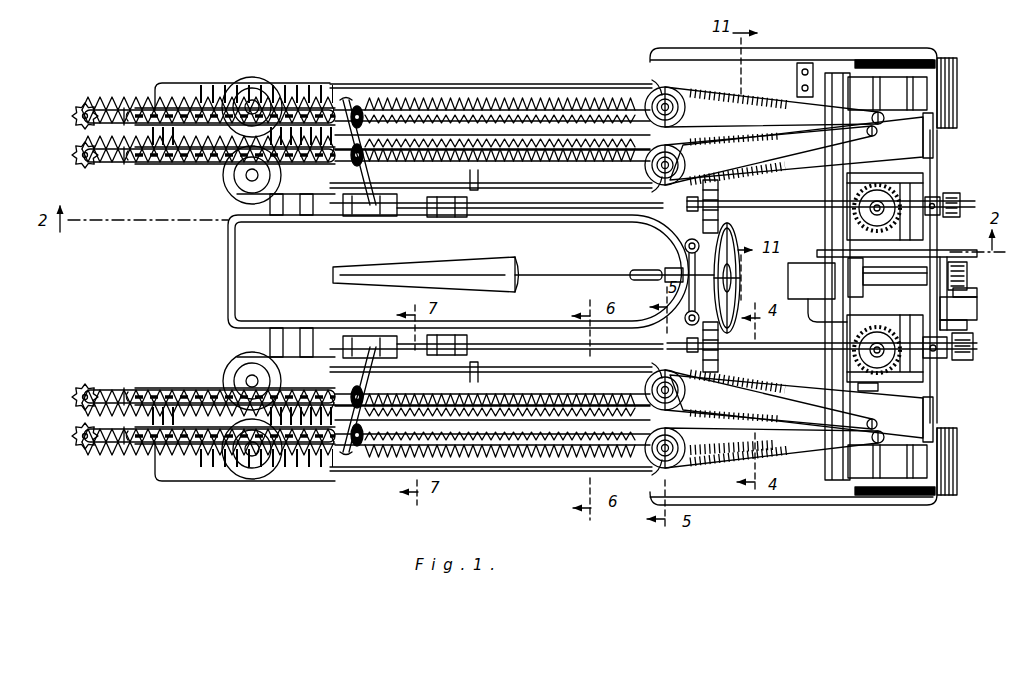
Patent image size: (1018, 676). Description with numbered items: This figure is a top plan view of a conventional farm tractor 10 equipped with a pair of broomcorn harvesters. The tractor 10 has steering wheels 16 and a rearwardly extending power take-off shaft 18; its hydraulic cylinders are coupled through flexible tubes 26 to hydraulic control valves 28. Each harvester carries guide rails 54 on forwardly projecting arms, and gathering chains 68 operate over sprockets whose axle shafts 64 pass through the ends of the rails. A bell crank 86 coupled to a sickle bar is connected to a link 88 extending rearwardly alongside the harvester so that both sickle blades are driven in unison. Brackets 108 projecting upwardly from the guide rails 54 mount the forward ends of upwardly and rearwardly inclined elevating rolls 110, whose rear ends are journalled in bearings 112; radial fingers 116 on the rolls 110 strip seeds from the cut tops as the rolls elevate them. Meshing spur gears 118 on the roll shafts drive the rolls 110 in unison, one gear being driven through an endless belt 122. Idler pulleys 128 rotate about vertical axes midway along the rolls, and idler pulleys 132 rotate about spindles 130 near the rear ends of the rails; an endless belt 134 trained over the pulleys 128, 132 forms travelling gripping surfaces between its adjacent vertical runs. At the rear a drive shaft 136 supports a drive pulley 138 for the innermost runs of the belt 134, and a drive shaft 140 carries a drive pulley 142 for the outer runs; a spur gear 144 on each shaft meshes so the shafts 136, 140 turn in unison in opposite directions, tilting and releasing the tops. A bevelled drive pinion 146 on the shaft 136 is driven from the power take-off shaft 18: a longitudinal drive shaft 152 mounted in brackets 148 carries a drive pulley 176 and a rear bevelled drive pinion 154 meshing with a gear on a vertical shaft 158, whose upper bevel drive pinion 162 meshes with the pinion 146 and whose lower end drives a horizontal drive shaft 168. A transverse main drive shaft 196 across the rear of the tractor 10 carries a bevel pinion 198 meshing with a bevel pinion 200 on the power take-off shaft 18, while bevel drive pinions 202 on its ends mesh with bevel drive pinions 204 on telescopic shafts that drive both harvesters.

The tractor 10 is at (228, 266).
The steering wheels 16 is at (172, 88).
The power take-off shaft 18 is at (880, 279).
The flexible tubes 26 is at (520, 210).
The hydraulic control valves 28 is at (685, 247).
The guide rails 54 is at (421, 155).
The axle shafts 64 is at (70, 152).
The gathering chains 68 is at (108, 165).
The bell crank 86 is at (130, 165).
The link 88 is at (196, 170).
The brackets 108 is at (125, 112).
The elevating rolls 110 is at (158, 112).
The bearings 112 is at (348, 100).
The radial fingers 116 is at (216, 108).
The spur gears 118 is at (363, 108).
The endless belt 122 is at (351, 216).
The idler pulleys 128 is at (268, 96).
The spindles 130 is at (673, 100).
The idler pulleys 132 is at (650, 95).
The endless belt 134 is at (476, 86).
The drive shaft 136 is at (812, 75).
The drive pulley 138 is at (774, 277).
The drive shaft 140 is at (910, 215).
The drive pulley 142 is at (962, 447).
The spur gear 144 is at (923, 60).
The bevelled drive pinion 146 is at (898, 200).
The brackets 148 is at (474, 172).
The drive shaft 152 is at (571, 213).
The bevelled drive pinion 154 is at (855, 205).
The vertically extending shaft 158 is at (860, 218).
The bevel drive pinion 162 is at (880, 330).
The drive shaft 168 is at (960, 205).
The drive pulley 176 is at (453, 217).
The main drive shaft 196 is at (977, 308).
The bevel pinion 198 is at (977, 292).
The bevel pinion 200 is at (968, 270).
The bevel drive pinions 202 is at (962, 360).
The bevel drive pinions 204 is at (967, 325).